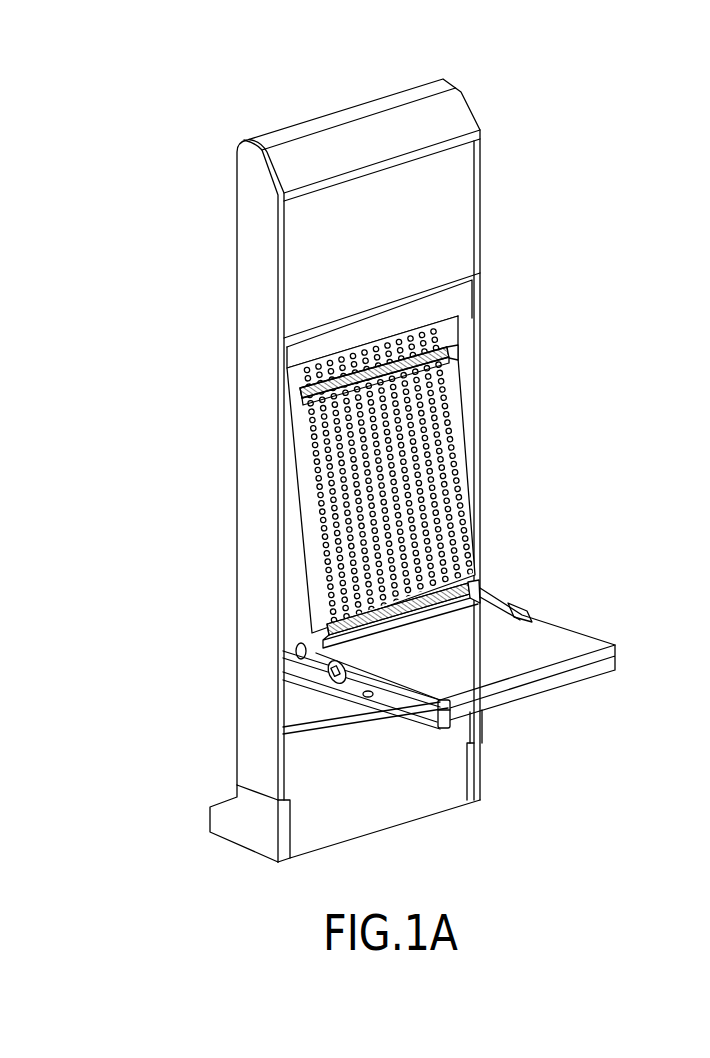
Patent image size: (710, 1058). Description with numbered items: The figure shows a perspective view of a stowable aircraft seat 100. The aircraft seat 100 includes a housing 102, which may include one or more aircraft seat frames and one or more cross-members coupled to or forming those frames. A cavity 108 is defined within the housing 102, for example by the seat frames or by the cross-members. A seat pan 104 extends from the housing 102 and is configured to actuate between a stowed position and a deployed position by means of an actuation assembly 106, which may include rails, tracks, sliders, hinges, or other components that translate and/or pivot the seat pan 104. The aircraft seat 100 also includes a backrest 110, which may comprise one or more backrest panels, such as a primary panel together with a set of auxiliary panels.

The stowable aircraft seat 100 is at (202, 70).
The housing 102 is at (467, 192).
The seat pan 104 is at (590, 651).
The actuation assembly 106 is at (296, 672).
The cavity 108 is at (294, 618).
The backrest 110 is at (458, 476).